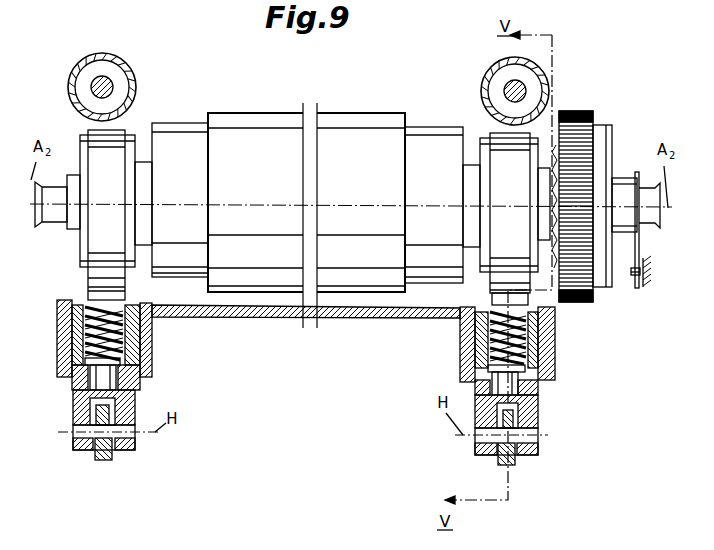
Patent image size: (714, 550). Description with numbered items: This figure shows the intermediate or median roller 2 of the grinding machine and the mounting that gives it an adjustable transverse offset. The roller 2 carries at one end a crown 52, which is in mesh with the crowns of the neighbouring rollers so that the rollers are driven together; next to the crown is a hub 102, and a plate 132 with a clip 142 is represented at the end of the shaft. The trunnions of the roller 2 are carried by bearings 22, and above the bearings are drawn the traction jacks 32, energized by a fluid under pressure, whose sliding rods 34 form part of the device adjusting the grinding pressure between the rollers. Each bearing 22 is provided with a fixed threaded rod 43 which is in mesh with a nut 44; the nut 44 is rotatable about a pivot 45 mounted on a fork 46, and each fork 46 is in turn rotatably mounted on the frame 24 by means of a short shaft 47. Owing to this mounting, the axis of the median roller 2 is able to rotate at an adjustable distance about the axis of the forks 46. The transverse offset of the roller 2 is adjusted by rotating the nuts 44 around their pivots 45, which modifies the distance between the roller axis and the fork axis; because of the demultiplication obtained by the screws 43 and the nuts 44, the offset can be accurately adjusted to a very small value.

The median roller 2 is at (367, 142).
The bearing 22 is at (110, 147).
The frame 24 is at (341, 319).
The traction jack 32 is at (104, 70).
The sliding rod 34 is at (95, 82).
The threaded rod 43 is at (133, 340).
The nut 44 is at (133, 387).
The pivot 45 is at (96, 380).
The fork 46 is at (82, 410).
The short shaft 47 is at (135, 438).
The crown 52 is at (578, 112).
The hub 102 is at (600, 137).
The plate 132 is at (638, 173).
The clip 142 is at (633, 276).